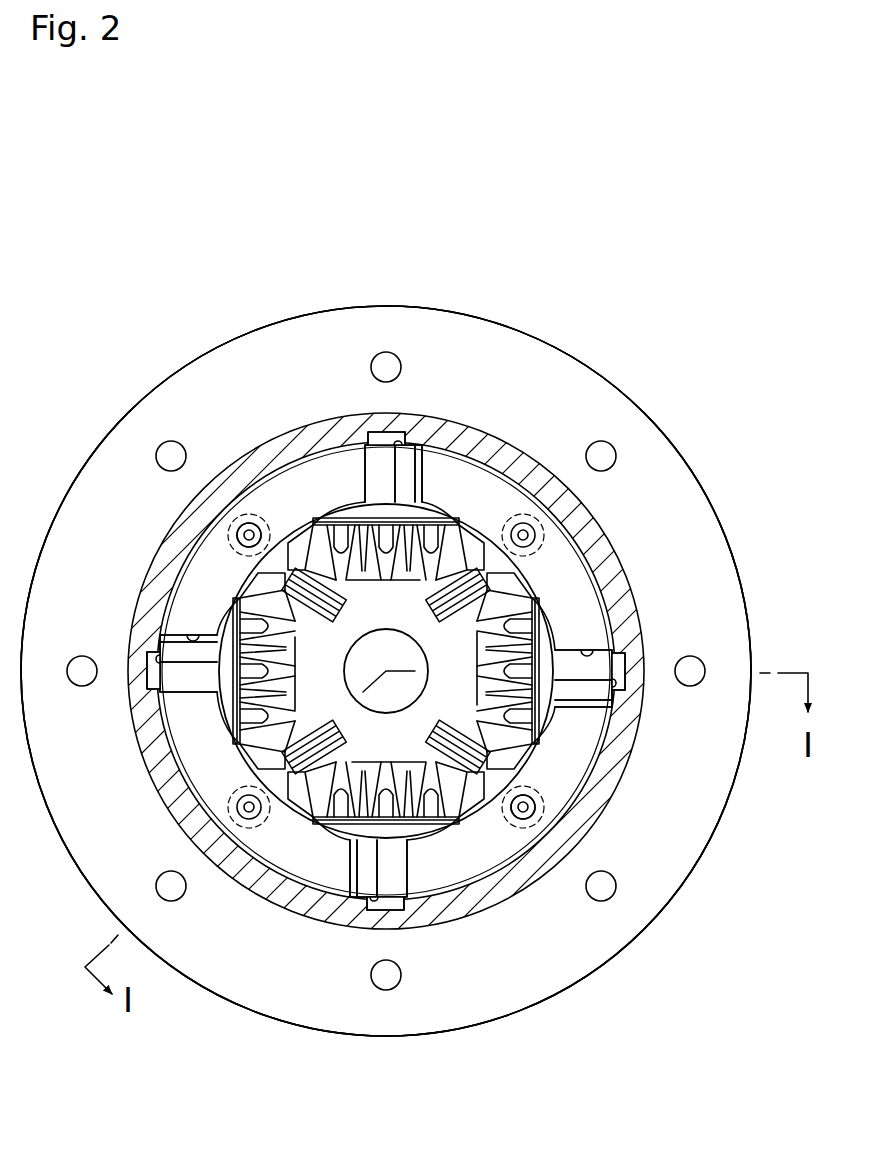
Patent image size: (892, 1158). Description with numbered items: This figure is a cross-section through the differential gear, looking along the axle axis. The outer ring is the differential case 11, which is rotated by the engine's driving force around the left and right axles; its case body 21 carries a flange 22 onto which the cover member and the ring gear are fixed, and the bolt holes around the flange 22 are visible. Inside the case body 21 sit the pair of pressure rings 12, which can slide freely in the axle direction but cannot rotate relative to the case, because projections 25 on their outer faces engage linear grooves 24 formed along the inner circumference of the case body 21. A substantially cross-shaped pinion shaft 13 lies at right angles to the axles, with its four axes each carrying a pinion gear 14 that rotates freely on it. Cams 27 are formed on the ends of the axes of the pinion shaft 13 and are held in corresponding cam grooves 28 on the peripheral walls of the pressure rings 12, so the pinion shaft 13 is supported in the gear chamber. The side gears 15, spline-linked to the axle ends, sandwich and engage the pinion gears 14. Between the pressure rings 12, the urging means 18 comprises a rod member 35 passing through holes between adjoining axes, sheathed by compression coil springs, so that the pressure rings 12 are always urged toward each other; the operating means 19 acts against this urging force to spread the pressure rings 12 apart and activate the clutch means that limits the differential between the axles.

The differential case 11 is at (624, 377).
The pressure rings 12 is at (318, 878).
The pinion shaft 13 is at (436, 631).
The pinion gears 14 is at (420, 518).
The side gears 15 is at (292, 578).
The urging means 18 is at (246, 516).
The operating means 19 is at (420, 470).
The case body 21 is at (564, 347).
The flange 22 is at (650, 432).
The grooves 24 is at (408, 436).
The projections 25 is at (378, 436).
The cams 27 is at (380, 438).
The cam grooves 28 is at (594, 651).
The rod member 35 is at (238, 536).